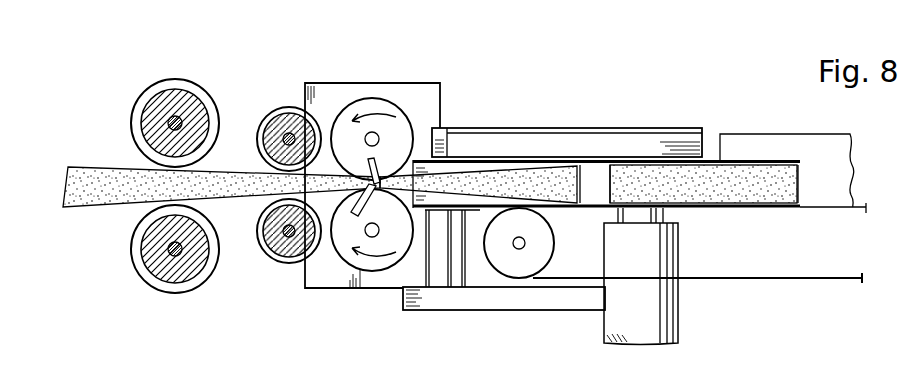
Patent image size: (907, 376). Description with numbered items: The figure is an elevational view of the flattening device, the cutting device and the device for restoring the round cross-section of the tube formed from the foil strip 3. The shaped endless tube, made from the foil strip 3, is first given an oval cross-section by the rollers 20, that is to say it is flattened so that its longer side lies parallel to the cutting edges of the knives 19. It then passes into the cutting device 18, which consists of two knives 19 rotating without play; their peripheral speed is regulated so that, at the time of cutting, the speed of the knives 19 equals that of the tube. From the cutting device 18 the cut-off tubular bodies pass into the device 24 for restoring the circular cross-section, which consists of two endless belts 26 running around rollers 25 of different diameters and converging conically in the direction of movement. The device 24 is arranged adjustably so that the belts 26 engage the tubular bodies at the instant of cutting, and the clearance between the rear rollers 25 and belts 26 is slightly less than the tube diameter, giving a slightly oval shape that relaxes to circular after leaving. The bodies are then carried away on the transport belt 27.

The foil strip 3 is at (90, 207).
The cutting device 18 is at (320, 83).
The knives 19 is at (385, 168).
The rollers 20 is at (263, 250).
The device for restoring the circular cross-section 24 is at (678, 244).
The rollers 25 is at (706, 160).
The endless belts 26 is at (460, 167).
The transport belt 27 is at (800, 283).